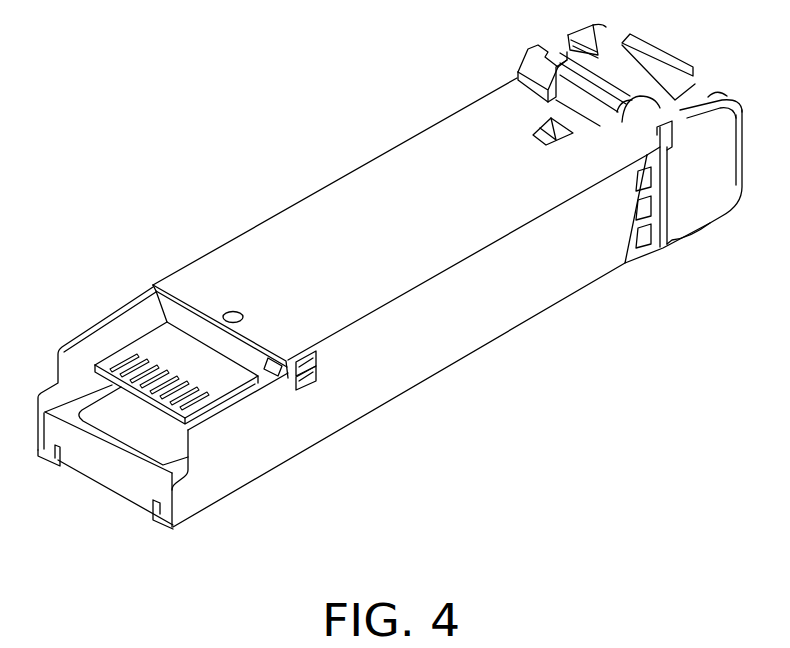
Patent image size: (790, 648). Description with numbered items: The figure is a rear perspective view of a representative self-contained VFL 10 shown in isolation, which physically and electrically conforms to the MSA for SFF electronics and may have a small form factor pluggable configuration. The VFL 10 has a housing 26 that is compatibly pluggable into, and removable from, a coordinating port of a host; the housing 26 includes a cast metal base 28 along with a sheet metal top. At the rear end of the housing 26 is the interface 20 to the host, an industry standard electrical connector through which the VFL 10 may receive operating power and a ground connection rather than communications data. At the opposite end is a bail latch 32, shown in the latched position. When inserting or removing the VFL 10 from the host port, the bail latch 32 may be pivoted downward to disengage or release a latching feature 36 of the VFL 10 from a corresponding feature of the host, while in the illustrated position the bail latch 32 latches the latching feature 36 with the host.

The VFL 10 is at (290, 228).
The interface 20 is at (158, 353).
The housing 26 is at (233, 262).
The cast metal base 28 is at (335, 398).
The bail latch 32 is at (690, 118).
The latching feature 36 is at (550, 133).